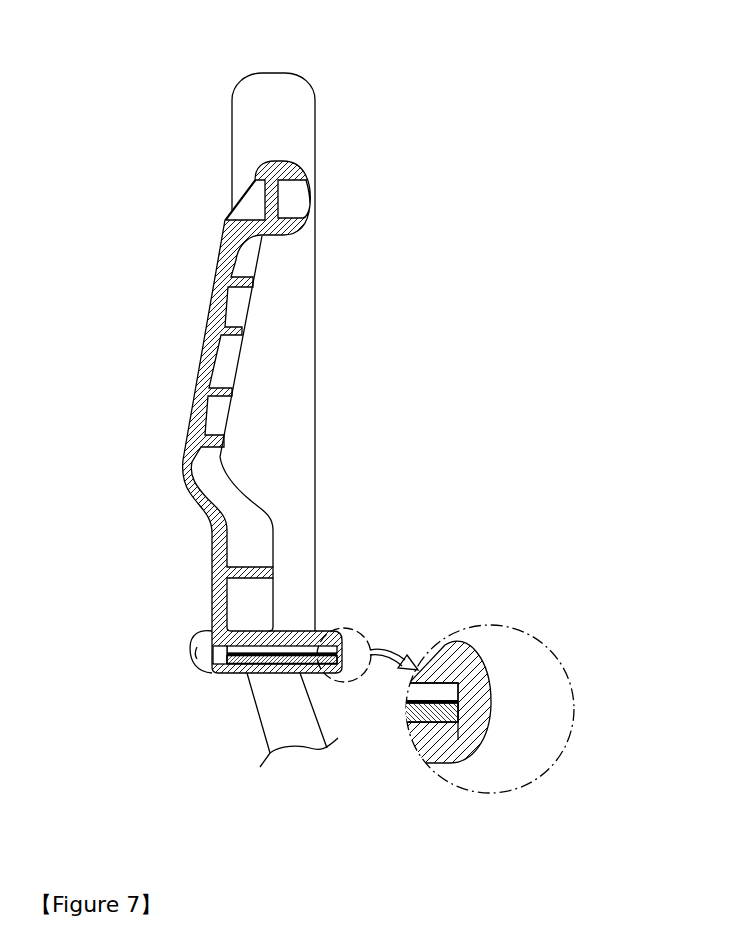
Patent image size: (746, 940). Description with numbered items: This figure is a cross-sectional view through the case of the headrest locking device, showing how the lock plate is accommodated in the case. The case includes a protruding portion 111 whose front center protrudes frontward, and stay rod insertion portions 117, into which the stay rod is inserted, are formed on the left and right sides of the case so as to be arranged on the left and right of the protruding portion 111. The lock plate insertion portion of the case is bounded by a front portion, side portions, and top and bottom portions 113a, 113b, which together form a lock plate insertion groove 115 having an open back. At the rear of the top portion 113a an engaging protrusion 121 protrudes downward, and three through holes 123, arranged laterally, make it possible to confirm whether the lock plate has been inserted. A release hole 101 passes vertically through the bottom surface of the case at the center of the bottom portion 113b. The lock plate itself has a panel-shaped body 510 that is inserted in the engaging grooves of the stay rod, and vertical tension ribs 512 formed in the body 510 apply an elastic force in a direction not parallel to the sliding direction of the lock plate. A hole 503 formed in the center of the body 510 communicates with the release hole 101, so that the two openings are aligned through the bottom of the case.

The release hole 101 is at (279, 665).
The protruding portion 111 is at (222, 357).
The top portion 113a is at (432, 660).
The bottom portion 113b is at (473, 743).
The lock plate insertion groove 115 is at (215, 648).
The stay rod insertion portion 117 is at (295, 115).
The engaging protrusion 121 is at (473, 693).
The through holes 123 is at (477, 713).
The hole 503 is at (265, 666).
The body 510 is at (242, 658).
The vertical tension ribs 512 is at (325, 647).